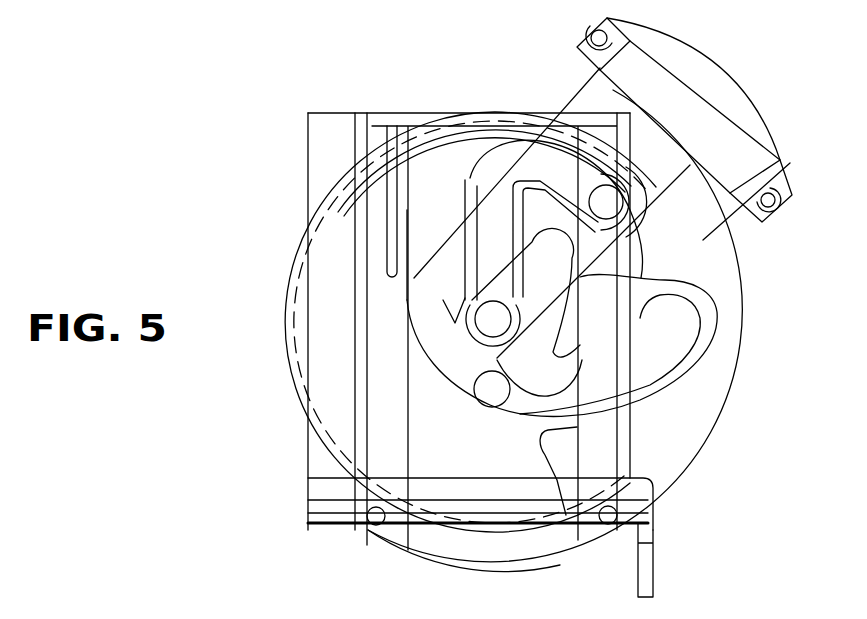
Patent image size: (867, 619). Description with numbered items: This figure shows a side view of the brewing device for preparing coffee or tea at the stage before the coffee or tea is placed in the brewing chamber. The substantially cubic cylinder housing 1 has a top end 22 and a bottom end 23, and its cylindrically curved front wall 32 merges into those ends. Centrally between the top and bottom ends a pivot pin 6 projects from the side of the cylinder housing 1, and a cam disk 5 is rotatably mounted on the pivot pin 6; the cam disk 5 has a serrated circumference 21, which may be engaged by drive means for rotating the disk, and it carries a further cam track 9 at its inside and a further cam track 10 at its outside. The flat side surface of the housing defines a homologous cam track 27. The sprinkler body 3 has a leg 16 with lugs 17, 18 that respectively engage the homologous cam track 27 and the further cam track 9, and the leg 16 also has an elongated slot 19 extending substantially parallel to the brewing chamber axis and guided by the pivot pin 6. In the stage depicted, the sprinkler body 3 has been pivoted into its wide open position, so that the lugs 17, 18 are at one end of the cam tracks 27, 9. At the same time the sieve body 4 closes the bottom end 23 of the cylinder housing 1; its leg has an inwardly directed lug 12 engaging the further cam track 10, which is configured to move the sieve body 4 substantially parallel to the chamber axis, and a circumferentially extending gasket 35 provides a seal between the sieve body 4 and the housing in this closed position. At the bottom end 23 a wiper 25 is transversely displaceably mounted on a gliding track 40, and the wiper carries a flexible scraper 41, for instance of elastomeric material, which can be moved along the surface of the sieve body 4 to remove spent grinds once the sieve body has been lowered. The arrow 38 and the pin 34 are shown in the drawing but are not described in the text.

The cylinder housing 1 is at (325, 140).
The sprinkler body 3 is at (710, 77).
The sieve body 4 is at (527, 563).
The cam disk 5 is at (291, 330).
The pivot pin 6 is at (485, 315).
The further cam track 9 is at (440, 147).
The further cam track 10 is at (667, 357).
The inwardly directed lug 12 is at (480, 385).
The leg 16 is at (725, 200).
The lug 17 is at (556, 113).
The lug 18 is at (603, 197).
The elongated slot 19 is at (553, 262).
The serrated circumference 21 is at (283, 372).
The top end 22 is at (335, 111).
The bottom end 23 is at (335, 535).
The wiper 25 is at (310, 485).
The homologous cam track 27 is at (468, 243).
The front wall 32 is at (750, 309).
The pivot pins 34 is at (780, 208).
The gasket 35 is at (614, 513).
The direction of movement 38 is at (272, 243).
The gliding track 40 is at (310, 512).
The flexible scraper 41 is at (652, 583).